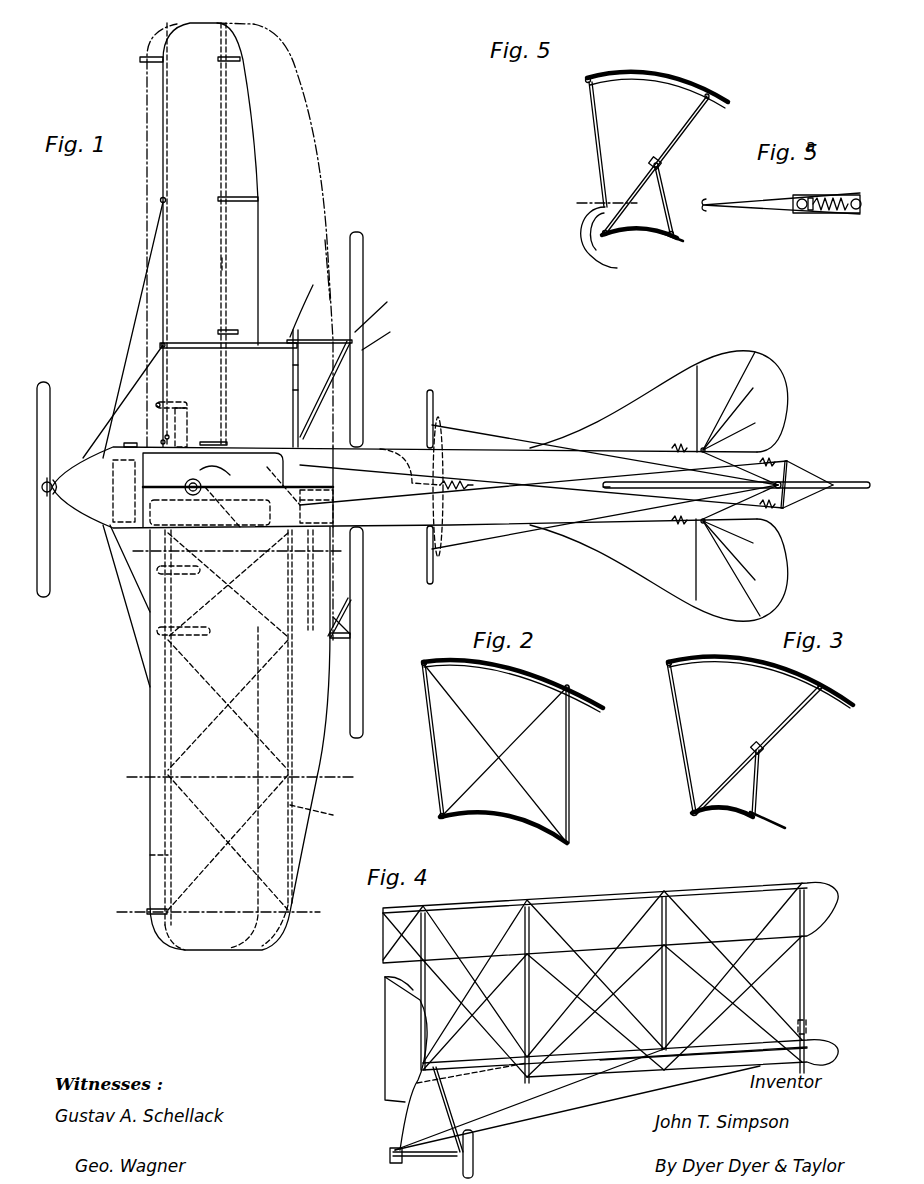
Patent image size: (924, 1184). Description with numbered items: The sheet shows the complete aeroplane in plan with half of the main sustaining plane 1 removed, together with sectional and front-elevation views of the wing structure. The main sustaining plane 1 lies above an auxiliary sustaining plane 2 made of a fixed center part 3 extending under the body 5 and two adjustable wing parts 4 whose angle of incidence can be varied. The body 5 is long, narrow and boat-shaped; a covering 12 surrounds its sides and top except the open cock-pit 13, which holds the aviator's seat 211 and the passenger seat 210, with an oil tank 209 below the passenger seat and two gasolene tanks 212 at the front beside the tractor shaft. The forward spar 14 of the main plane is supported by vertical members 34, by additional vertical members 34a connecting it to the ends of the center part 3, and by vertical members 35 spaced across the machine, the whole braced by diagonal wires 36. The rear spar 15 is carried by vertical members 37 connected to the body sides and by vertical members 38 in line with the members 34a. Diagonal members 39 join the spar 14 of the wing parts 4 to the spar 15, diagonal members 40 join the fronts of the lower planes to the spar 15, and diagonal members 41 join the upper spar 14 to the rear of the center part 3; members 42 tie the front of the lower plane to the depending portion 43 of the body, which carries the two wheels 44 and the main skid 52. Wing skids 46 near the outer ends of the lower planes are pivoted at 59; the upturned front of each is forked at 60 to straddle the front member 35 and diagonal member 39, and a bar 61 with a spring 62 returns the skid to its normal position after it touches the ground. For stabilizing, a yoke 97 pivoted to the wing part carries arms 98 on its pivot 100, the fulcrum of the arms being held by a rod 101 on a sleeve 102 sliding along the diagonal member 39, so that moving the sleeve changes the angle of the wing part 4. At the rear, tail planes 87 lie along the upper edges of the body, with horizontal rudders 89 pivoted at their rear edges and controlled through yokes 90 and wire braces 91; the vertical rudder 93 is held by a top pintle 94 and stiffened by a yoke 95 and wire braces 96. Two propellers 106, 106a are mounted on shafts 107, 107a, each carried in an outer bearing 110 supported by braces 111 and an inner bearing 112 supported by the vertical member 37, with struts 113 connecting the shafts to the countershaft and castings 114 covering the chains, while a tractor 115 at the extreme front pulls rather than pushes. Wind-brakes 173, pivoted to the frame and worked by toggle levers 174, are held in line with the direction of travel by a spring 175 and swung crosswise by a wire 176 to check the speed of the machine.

In FIG. 1, the main sustaining plane 1 is at (234, 756).
In FIG. 5, the main sustaining plane 1 is at (645, 70).
In FIG. 2, the main sustaining plane 1 is at (535, 666).
In FIG. 3, the main sustaining plane 1 is at (755, 655).
In FIG. 4, the main sustaining plane 1 is at (619, 886).
In FIG. 1, the auxiliary sustaining plane 2 is at (239, 486).
In FIG. 5, the auxiliary sustaining plane 2 is at (639, 223).
In FIG. 2, the auxiliary sustaining plane 2 is at (503, 819).
In FIG. 3, the auxiliary sustaining plane 2 is at (722, 801).
In FIG. 4, the auxiliary sustaining plane 2 is at (630, 1055).
In FIG. 1, the fixed center part 3 is at (240, 576).
In FIG. 4, the fixed center part 3 is at (470, 1059).
In FIG. 1, the adjustable wing parts 4 is at (198, 271).
In FIG. 4, the adjustable wing parts 4 is at (724, 1041).
In FIG. 1, the body 5 is at (419, 673).
In FIG. 4, the body 5 is at (406, 1063).
In FIG. 1, the covering 12 is at (540, 476).
In FIG. 1, the cock-pit 13 is at (232, 447).
In FIG. 1, the forward spar 14 is at (150, 856).
In FIG. 5, the forward spar 14 is at (590, 84).
In FIG. 2, the forward spar 14 is at (450, 646).
In FIG. 3, the forward spar 14 is at (684, 648).
In FIG. 1, the rear spar 15 is at (352, 826).
In FIG. 5, the rear spar 15 is at (735, 86).
In FIG. 2, the rear spar 15 is at (590, 680).
In FIG. 3, the rear spar 15 is at (846, 683).
In FIG. 1, the vertical members 34 is at (168, 437).
In FIG. 2, the vertical members 34 is at (433, 742).
In FIG. 4, the vertical members 34 is at (452, 1009).
In FIG. 1, the additional vertical members 34a is at (126, 650).
In FIG. 4, the additional vertical members 34a is at (560, 992).
In FIG. 1, the vertical members 35 is at (160, 65).
In FIG. 5, the vertical members 35 is at (587, 144).
In FIG. 5A, the vertical members 35 is at (797, 217).
In FIG. 3, the vertical members 35 is at (674, 737).
In FIG. 4, the vertical members 35 is at (667, 984).
In FIG. 4, the diagonal wires 36 is at (630, 920).
In FIG. 1, the vertical members 37 is at (293, 446).
In FIG. 2, the vertical members 37 is at (571, 768).
In FIG. 1, the vertical members 38 is at (247, 655).
In FIG. 5, the diagonal members 39 is at (676, 146).
In FIG. 5A, the diagonal members 39 is at (858, 215).
In FIG. 3, the diagonal members 39 is at (757, 750).
In FIG. 2, the diagonal members 40 is at (505, 751).
In FIG. 2, the diagonal members 41 is at (506, 724).
In FIG. 4, the members 42 is at (543, 1100).
In FIG. 4, the depending portion 43 is at (402, 1163).
In FIG. 1, the wheels 44 is at (215, 397).
In FIG. 4, the wheels 44 is at (505, 1166).
In FIG. 1, the wing skids 46 is at (142, 59).
In FIG. 5, the wing skids 46 is at (615, 269).
In FIG. 5A, the wing skids 46 is at (752, 232).
In FIG. 4, the wing skids 46 is at (810, 1068).
In FIG. 4, the main skid 52 is at (393, 1154).
In FIG. 5, the pivot 59 is at (608, 237).
In FIG. 5, the fork 60 is at (607, 205).
In FIG. 5A, the fork 60 is at (822, 194).
In FIG. 5A, the bar 61 is at (842, 214).
In FIG. 5A, the spring 62 is at (815, 213).
In FIG. 1, the tail plane 87 is at (659, 486).
In FIG. 1, the horizontal rudders 89 is at (800, 581).
In FIG. 1, the yokes 90 is at (704, 447).
In FIG. 1, the wire braces 91 is at (762, 420).
In FIG. 1, the vertical rudder 93 is at (845, 482).
In FIG. 1, the top pintle 94 is at (786, 461).
In FIG. 1, the yoke 95 is at (790, 498).
In FIG. 1, the wire braces 96 is at (813, 472).
In FIG. 1, the yoke 97 is at (238, 330).
In FIG. 5, the yoke 97 is at (676, 241).
In FIG. 3, the yoke 97 is at (758, 818).
In FIG. 1, the arms 98 is at (235, 63).
In FIG. 5, the arms 98 is at (675, 232).
In FIG. 3, the arms 98 is at (762, 813).
In FIG. 1, the pivot 100 is at (222, 264).
In FIG. 5, the rod 101 is at (666, 193).
In FIG. 5, the sleeve 102 is at (661, 165).
In FIG. 1, the propeller 106 is at (363, 382).
In FIG. 1, the propeller 106a is at (363, 604).
In FIG. 1, the propeller shaft 107 is at (320, 338).
In FIG. 1, the propeller shaft 107a is at (330, 642).
In FIG. 1, the outer bearing 110 is at (357, 623).
In FIG. 1, the braces 111 is at (363, 350).
In FIG. 1, the inner bearing 112 is at (328, 266).
In FIG. 1, the struts 113 is at (296, 375).
In FIG. 1, the castings 114 is at (296, 390).
In FIG. 1, the tractor 115 is at (50, 562).
In FIG. 1, the wind-brakes 173 is at (434, 414).
In FIG. 1, the toggle levers 174 is at (443, 535).
In FIG. 1, the spring 175 is at (460, 470).
In FIG. 1, the wire 176 is at (405, 491).
In FIG. 1, the oil tank 209 is at (333, 498).
In FIG. 1, the passenger seat 210 is at (232, 476).
In FIG. 1, the aviator's seat 211 is at (210, 487).
In FIG. 1, the gasolene tanks 212 is at (130, 468).